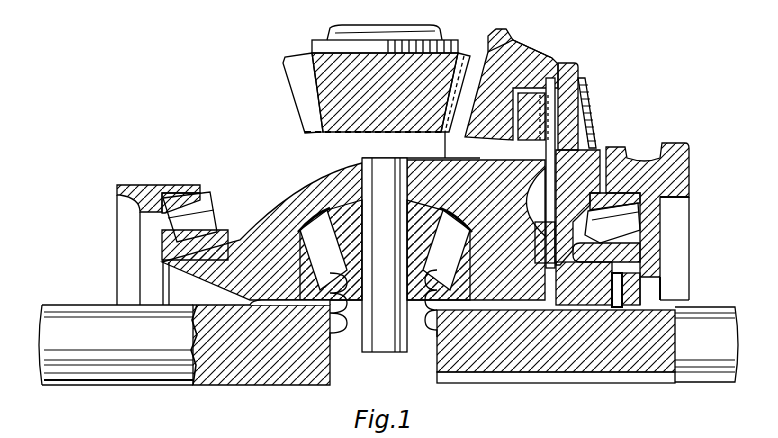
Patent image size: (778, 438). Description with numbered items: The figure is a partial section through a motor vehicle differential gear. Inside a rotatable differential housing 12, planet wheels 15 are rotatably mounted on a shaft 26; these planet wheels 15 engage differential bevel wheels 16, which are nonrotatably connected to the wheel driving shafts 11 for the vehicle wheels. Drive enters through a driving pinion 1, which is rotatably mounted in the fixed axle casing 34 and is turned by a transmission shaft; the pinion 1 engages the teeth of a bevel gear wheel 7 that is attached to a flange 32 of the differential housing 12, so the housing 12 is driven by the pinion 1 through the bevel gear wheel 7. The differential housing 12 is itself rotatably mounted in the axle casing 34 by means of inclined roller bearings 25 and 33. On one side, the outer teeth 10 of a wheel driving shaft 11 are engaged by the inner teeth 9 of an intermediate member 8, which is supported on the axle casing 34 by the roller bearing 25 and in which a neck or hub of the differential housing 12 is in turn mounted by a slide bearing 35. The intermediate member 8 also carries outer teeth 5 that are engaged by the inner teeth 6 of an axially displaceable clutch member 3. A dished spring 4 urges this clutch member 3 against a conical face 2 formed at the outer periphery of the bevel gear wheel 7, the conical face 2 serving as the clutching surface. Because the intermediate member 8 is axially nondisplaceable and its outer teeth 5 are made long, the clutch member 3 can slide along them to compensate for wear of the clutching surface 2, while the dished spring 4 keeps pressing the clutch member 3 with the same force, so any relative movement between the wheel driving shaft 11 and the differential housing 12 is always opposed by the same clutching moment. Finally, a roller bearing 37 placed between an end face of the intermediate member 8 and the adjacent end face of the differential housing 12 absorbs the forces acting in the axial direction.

The driving pinion 1 is at (333, 96).
The conical face 2 is at (528, 58).
The clutch member 3 is at (580, 100).
The dished spring 4 is at (588, 120).
The outer teeth 5 is at (626, 170).
The inner teeth 6 is at (584, 143).
The bevel gear wheel 7 is at (498, 82).
The intermediate member 8 is at (637, 284).
The inner teeth 9 is at (625, 308).
The outer teeth 10 is at (582, 375).
The wheel driving shaft 11 is at (557, 347).
The differential housing 12 is at (543, 288).
The planet wheels 15 is at (343, 227).
The differential bevel wheels 16 is at (287, 250).
The roller bearing 25 is at (662, 220).
The shaft 26 is at (372, 180).
The flange 32 is at (576, 72).
The roller bearing 33 is at (206, 218).
The axle casing 34 is at (205, 185).
The slide bearing 35 is at (640, 300).
The roller bearing 37 is at (642, 267).